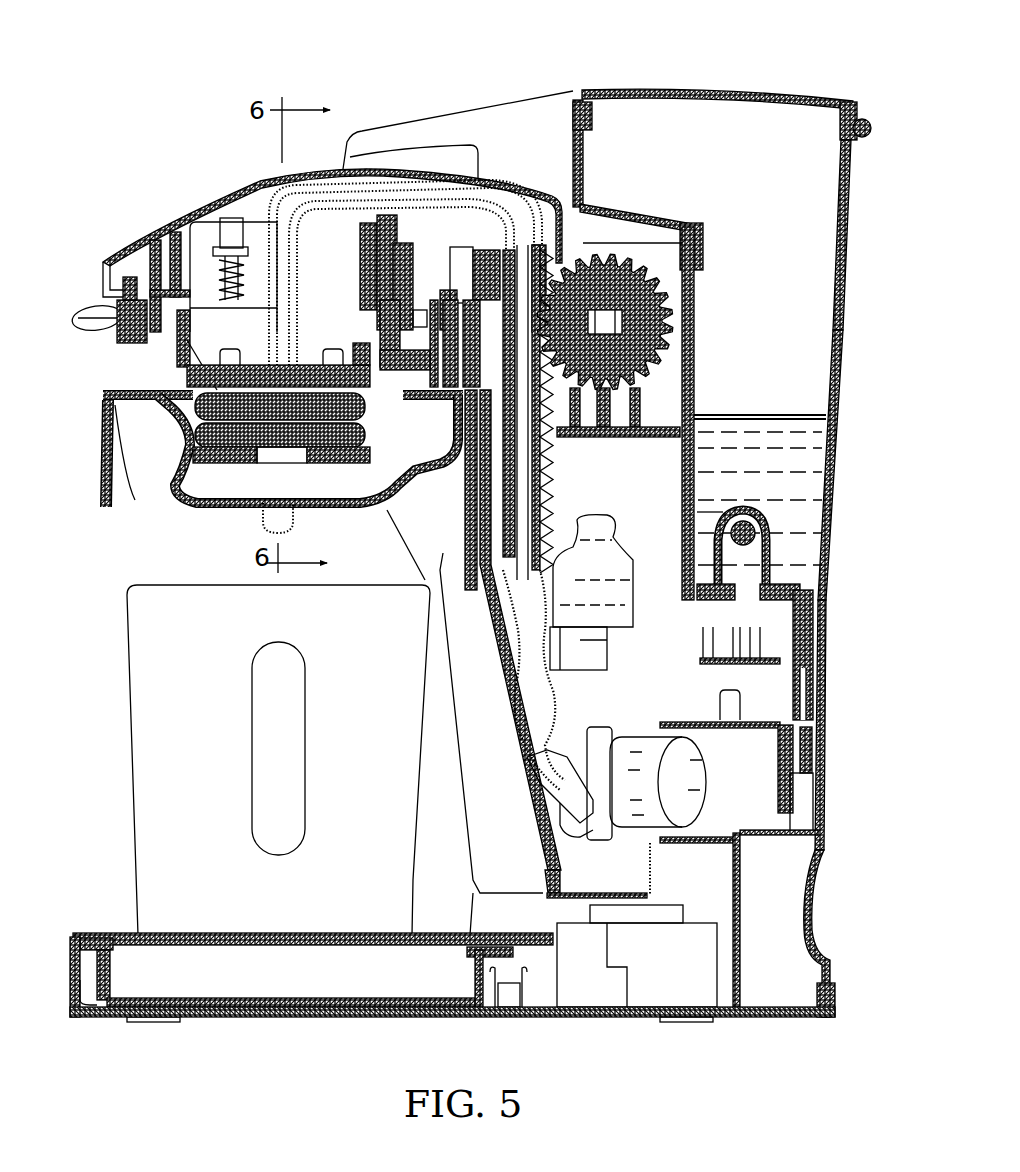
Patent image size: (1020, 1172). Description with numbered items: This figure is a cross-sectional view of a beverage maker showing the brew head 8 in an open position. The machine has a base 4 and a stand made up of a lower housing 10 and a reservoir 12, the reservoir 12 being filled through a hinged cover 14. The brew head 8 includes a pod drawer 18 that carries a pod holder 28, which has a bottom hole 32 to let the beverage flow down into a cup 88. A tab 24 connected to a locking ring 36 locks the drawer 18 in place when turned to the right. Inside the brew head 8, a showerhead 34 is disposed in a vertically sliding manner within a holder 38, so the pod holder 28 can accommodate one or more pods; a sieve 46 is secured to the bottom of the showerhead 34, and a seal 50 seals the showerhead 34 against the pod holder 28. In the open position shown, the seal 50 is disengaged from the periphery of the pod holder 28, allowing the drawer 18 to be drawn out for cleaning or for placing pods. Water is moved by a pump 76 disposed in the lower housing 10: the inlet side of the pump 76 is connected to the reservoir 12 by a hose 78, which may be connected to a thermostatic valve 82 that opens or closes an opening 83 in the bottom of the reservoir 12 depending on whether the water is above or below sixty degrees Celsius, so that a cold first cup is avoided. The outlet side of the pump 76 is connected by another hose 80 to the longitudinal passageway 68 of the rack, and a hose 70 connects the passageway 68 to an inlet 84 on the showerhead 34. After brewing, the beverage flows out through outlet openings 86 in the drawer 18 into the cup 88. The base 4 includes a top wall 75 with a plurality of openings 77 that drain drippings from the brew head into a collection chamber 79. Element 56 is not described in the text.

The base 4 is at (297, 1017).
The brew head 8 is at (148, 207).
The lower housing 10 is at (823, 662).
The reservoir 12 is at (828, 448).
The hinged cover 14 is at (788, 101).
The pod drawer 18 is at (100, 497).
The tab 24 is at (78, 317).
The pod holder 28 is at (170, 480).
The bottom hole 32 is at (243, 467).
The showerhead 34 is at (147, 407).
The locking ring 36 is at (113, 320).
The holder 38 is at (150, 260).
The sieve 46 is at (315, 460).
The seal 50 is at (187, 377).
The inner tube 56 is at (420, 272).
The longitudinal passageway 68 is at (555, 457).
The hose 70 is at (370, 186).
The top wall 75 is at (113, 933).
The pump 76 is at (712, 767).
The openings 77 is at (197, 945).
The hose 78 is at (590, 672).
The collection chamber 79 is at (113, 1007).
The hose 80 is at (507, 668).
The thermostatic valve 82 is at (590, 655).
The opening 83 is at (585, 630).
The inlet 84 is at (313, 370).
The outlet openings 86 is at (262, 520).
The cup 88 is at (147, 735).